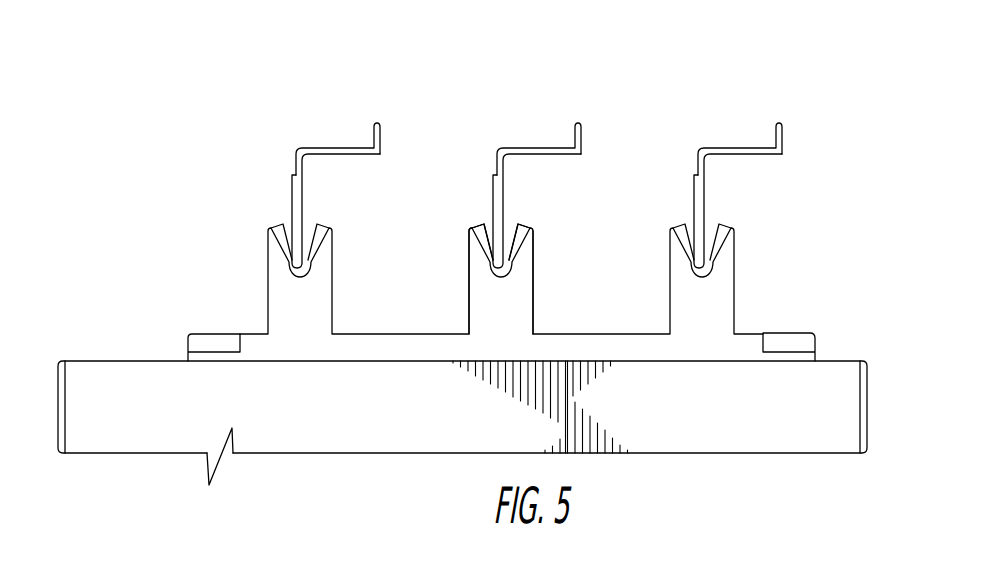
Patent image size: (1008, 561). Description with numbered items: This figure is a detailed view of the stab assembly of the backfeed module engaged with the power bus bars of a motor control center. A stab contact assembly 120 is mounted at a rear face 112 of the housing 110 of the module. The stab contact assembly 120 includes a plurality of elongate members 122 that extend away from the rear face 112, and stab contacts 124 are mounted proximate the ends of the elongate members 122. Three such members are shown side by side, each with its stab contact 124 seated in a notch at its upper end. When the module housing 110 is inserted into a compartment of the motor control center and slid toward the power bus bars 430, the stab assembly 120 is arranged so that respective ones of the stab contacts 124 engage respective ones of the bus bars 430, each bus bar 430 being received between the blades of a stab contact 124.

The housing 110 is at (58, 398).
The rear face 112 is at (182, 328).
The stab contact assembly 120 is at (756, 285).
The elongate members 122 is at (533, 302).
The stab contacts 124 is at (519, 216).
The power bus bars 430 is at (735, 148).